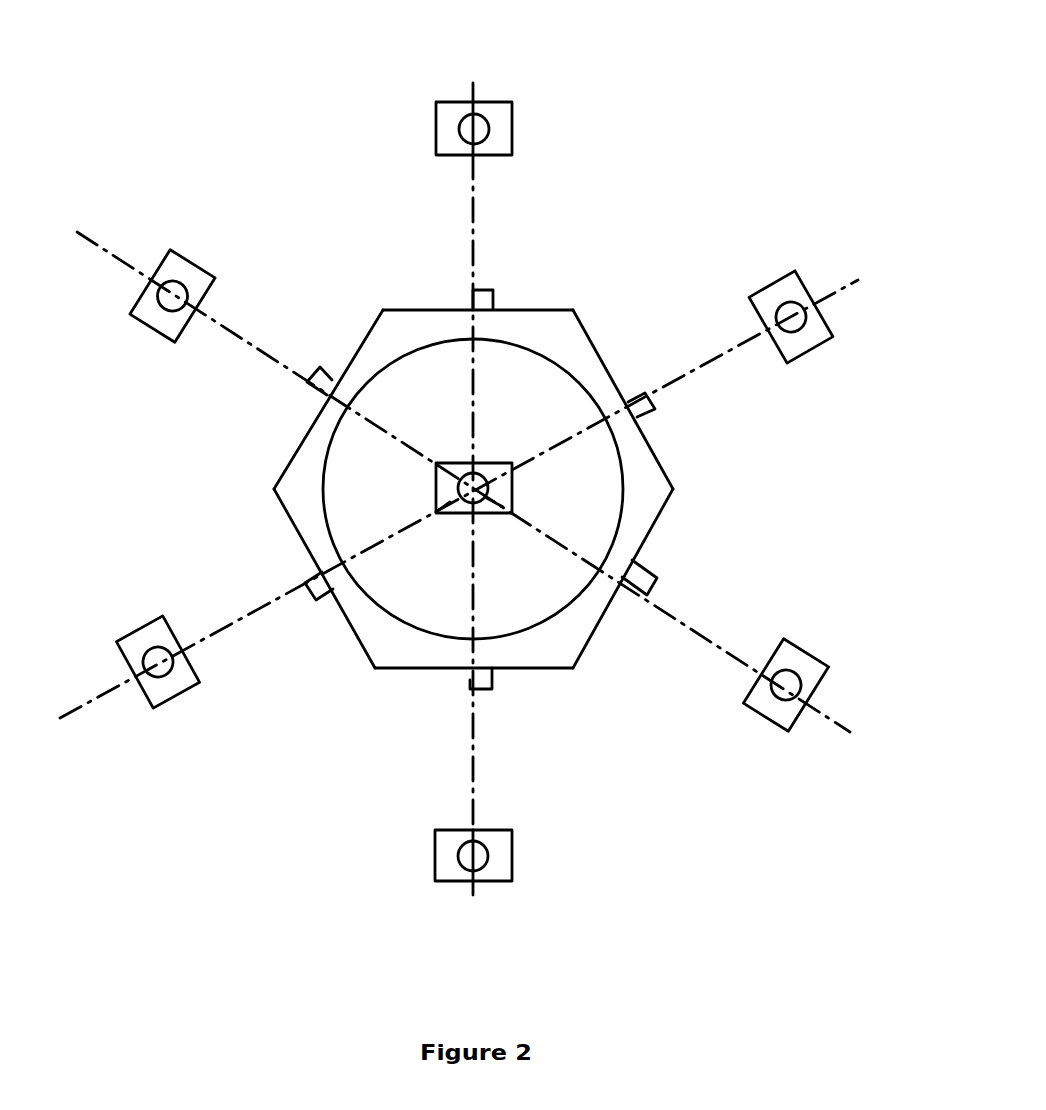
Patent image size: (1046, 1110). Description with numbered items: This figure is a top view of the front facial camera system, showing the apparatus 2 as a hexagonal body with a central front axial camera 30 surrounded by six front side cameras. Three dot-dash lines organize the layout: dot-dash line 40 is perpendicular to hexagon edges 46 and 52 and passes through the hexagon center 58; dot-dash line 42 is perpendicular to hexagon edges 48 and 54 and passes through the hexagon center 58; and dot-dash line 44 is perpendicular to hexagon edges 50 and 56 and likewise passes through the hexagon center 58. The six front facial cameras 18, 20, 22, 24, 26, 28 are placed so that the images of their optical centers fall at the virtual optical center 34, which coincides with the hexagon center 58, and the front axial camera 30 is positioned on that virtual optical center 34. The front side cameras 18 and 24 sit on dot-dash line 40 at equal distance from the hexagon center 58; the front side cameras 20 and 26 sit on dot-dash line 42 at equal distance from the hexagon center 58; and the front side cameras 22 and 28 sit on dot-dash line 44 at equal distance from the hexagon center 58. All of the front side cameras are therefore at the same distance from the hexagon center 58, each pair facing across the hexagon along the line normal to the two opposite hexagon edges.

The hexagonal housing 2 is at (511, 472).
The front side camera 18 is at (500, 122).
The front side camera 20 is at (797, 292).
The front side camera 22 is at (812, 668).
The front side camera 24 is at (498, 843).
The front side camera 26 is at (180, 683).
The front side camera 28 is at (170, 330).
The front axial camera 30 is at (503, 490).
The virtual optical center 34 is at (606, 330).
The hexagon center 58 is at (482, 480).
The dot-dash line 40 is at (473, 83).
The dot-dash line 42 is at (847, 286).
The dot-dash line 44 is at (130, 265).
The hexagon edge 46 is at (520, 308).
The hexagon edge 48 is at (650, 443).
The hexagon edge 50 is at (603, 623).
The hexagon edge 52 is at (448, 672).
The hexagon edge 54 is at (298, 534).
The hexagon edge 56 is at (310, 423).